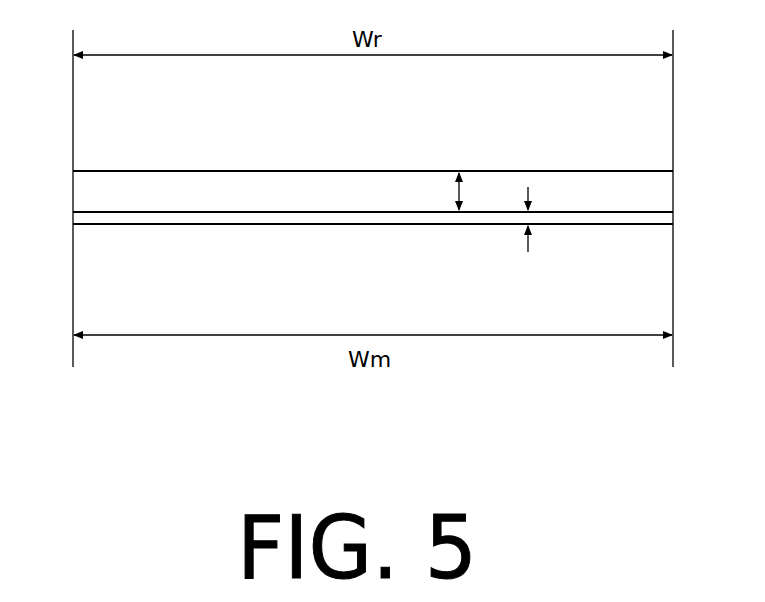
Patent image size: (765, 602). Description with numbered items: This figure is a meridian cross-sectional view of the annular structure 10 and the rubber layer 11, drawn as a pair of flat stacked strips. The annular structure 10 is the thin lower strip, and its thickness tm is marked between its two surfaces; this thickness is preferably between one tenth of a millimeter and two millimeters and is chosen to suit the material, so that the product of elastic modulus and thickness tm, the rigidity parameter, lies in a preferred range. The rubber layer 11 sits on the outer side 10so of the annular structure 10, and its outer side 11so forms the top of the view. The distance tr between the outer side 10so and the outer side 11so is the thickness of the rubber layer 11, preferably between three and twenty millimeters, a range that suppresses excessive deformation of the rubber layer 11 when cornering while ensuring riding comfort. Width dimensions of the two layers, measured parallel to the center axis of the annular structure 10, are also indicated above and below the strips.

The annular structure 10 is at (360, 225).
The rubber layer 11 is at (358, 178).
The outer side of the annular structure 10so is at (220, 208).
The outer side of the rubber layer 11so is at (523, 168).
The distance (thickness of the rubber layer) tr is at (458, 195).
The thickness of the annular structure tm is at (529, 218).